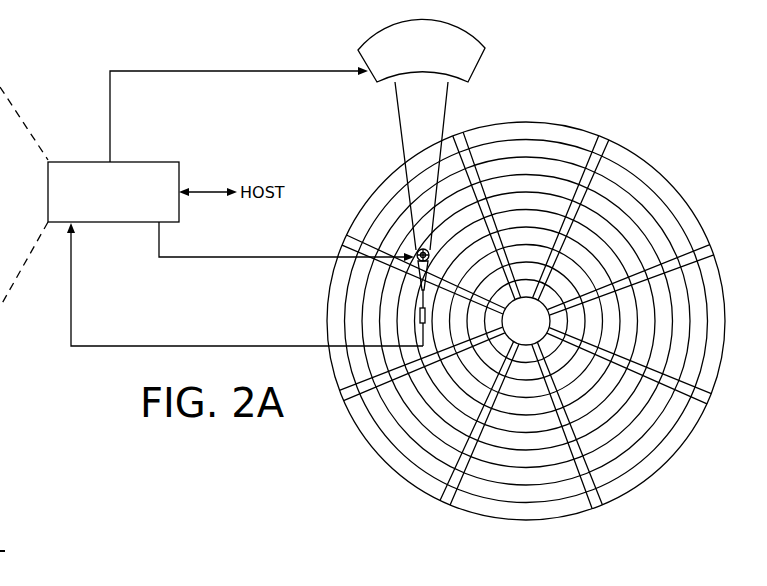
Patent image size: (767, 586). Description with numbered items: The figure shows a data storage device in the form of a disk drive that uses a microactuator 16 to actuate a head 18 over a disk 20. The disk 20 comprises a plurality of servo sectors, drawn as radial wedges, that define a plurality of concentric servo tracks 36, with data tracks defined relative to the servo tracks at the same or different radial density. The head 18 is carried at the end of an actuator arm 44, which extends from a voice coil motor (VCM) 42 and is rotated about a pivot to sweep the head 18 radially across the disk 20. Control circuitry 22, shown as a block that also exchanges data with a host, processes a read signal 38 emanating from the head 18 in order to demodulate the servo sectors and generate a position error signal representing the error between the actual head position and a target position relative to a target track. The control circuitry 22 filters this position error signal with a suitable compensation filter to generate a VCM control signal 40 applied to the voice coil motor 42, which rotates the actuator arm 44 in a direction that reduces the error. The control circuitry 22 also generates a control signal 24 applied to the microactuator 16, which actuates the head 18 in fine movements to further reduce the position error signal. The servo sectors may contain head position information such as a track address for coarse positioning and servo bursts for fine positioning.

The microactuator 16 is at (442, 257).
The head 18 is at (411, 312).
The disk 20 is at (666, 163).
The control circuitry 22 is at (148, 162).
The control signal 24 is at (243, 257).
The servo track 36 is at (512, 145).
The read signal 38 is at (254, 346).
The control signal 40 is at (110, 101).
The voice coil motor 42 is at (375, 81).
The actuator arm 44 is at (406, 128).